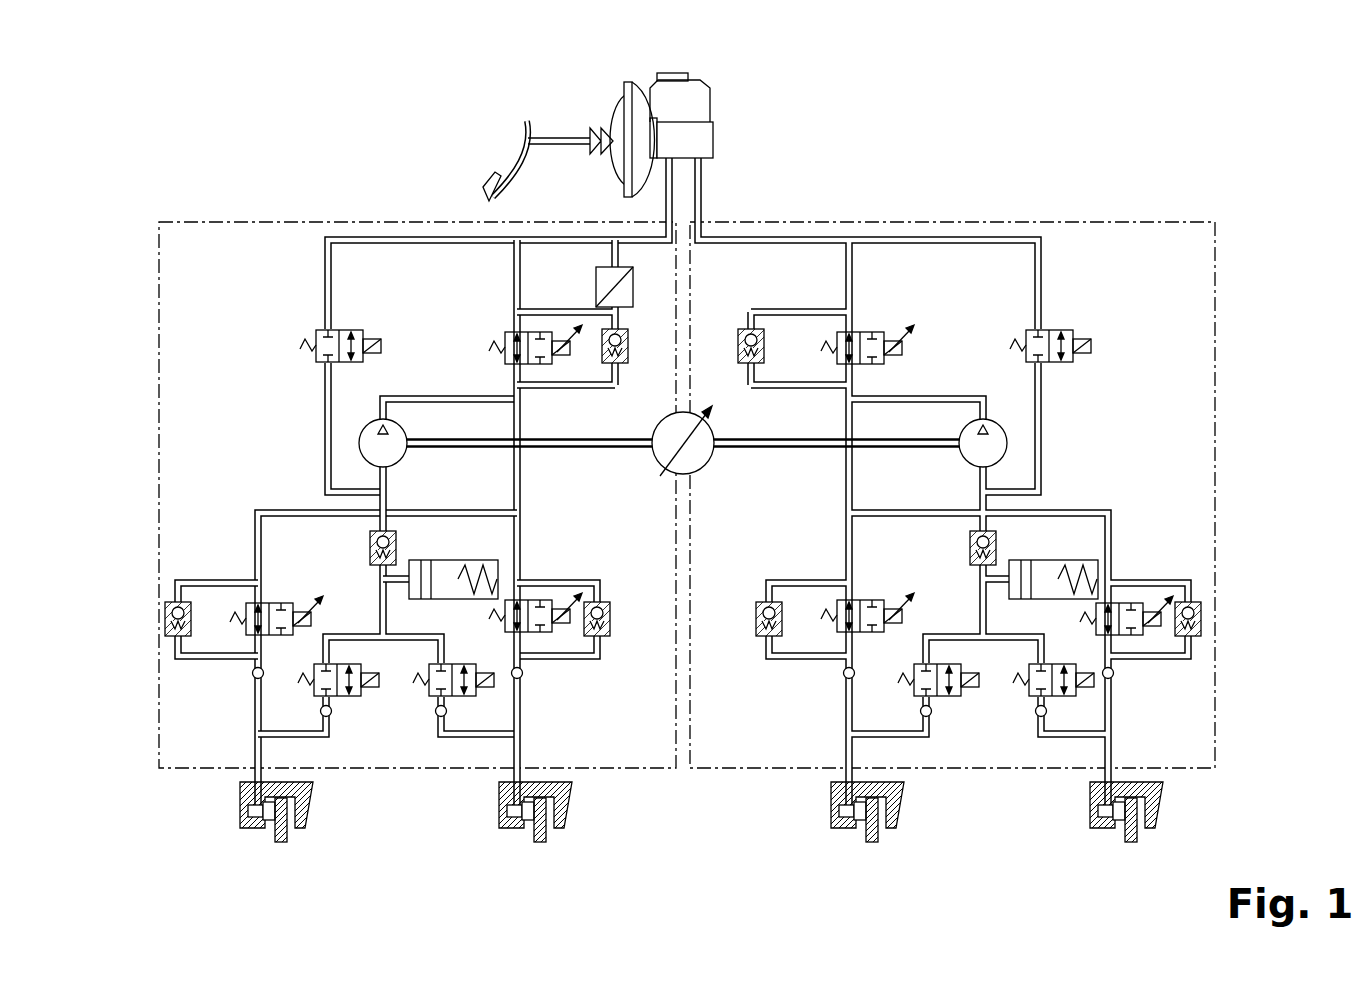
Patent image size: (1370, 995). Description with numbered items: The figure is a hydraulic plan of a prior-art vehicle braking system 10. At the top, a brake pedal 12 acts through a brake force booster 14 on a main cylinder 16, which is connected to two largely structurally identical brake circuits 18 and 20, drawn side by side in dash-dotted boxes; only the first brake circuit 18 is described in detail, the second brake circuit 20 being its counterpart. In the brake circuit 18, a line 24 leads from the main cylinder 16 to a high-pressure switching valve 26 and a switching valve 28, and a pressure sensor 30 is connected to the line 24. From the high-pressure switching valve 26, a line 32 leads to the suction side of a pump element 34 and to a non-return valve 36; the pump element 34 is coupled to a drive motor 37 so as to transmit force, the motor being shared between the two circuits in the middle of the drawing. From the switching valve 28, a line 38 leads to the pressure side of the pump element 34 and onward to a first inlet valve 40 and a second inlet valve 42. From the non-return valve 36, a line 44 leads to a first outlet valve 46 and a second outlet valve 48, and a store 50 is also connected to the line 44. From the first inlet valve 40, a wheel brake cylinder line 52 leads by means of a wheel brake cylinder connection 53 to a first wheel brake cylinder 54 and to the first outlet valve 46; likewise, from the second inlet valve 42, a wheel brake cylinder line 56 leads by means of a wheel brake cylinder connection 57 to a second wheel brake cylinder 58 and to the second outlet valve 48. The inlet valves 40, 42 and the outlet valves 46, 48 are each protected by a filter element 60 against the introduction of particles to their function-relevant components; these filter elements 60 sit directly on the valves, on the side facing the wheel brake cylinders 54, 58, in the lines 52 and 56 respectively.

The vehicle braking system 10 is at (283, 152).
The brake pedal 12 is at (487, 182).
The brake force booster 14 is at (612, 120).
The main cylinder 16 is at (713, 140).
The brake circuit 18 is at (210, 222).
The brake circuit 20 is at (1160, 222).
The line 24 is at (325, 282).
The high-pressure switching valve 26 is at (316, 355).
The switching valve 28 is at (505, 338).
The pressure sensor 30 is at (596, 290).
The line 32 is at (325, 443).
The pump element 34 is at (400, 455).
The non-return valve 36 is at (371, 548).
The drive motor 37 is at (705, 460).
The line 38 is at (521, 490).
The first inlet valve 40 is at (246, 612).
The second inlet valve 42 is at (545, 632).
The line 44 is at (386, 640).
The first outlet valve 46 is at (357, 697).
The second outlet valve 48 is at (468, 697).
The store 50 is at (495, 565).
The wheel brake cylinder line 52 is at (255, 722).
The wheel brake cylinder connection 53 is at (205, 785).
The first wheel brake cylinder 54 is at (240, 817).
The wheel brake cylinder line 56 is at (521, 738).
The wheel brake cylinder connection 57 is at (598, 787).
The second wheel brake cylinder 58 is at (575, 810).
The filter element 60 is at (253, 673).